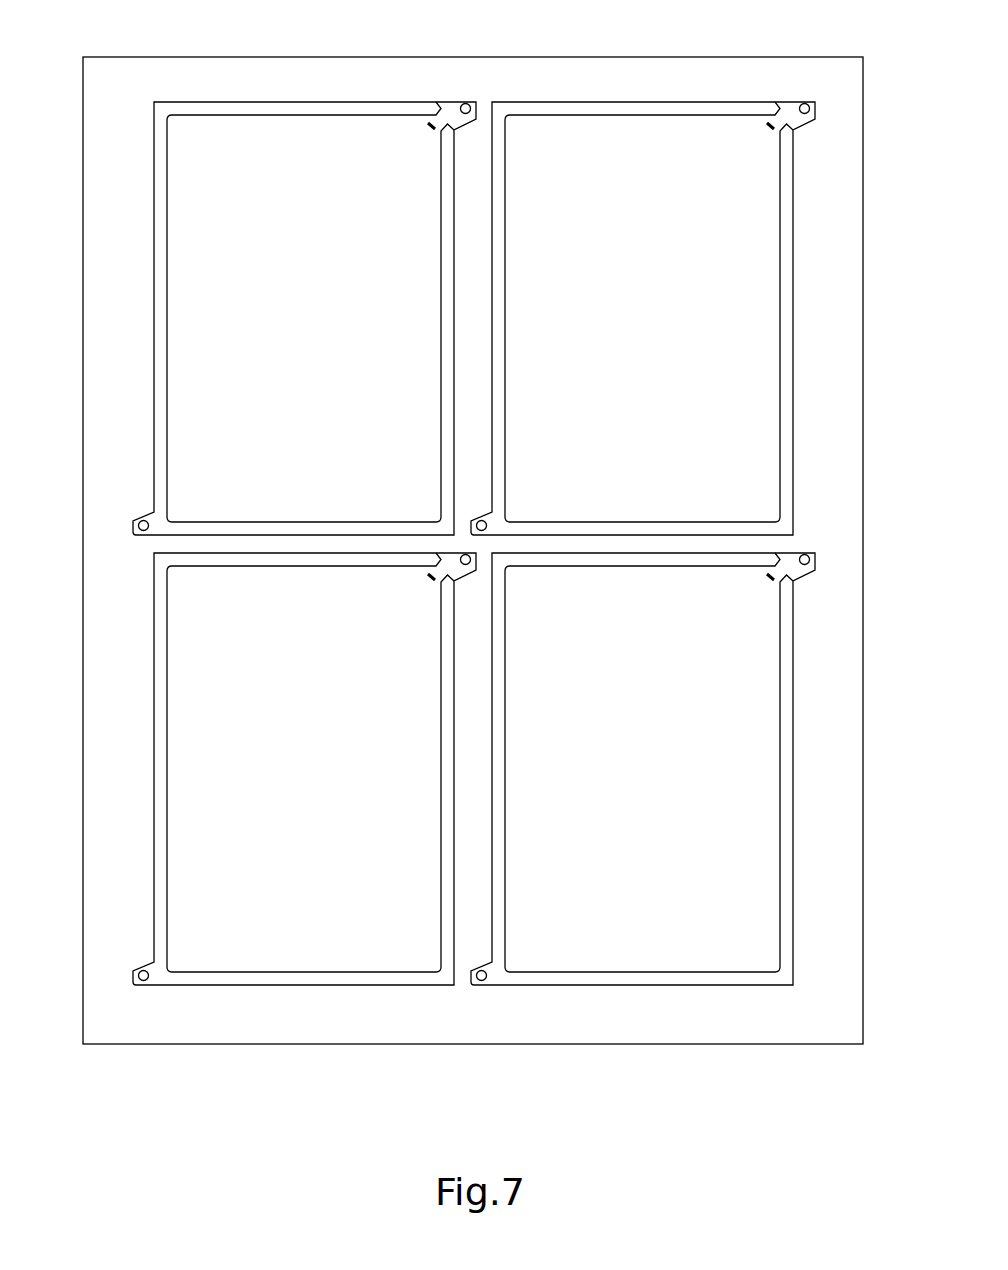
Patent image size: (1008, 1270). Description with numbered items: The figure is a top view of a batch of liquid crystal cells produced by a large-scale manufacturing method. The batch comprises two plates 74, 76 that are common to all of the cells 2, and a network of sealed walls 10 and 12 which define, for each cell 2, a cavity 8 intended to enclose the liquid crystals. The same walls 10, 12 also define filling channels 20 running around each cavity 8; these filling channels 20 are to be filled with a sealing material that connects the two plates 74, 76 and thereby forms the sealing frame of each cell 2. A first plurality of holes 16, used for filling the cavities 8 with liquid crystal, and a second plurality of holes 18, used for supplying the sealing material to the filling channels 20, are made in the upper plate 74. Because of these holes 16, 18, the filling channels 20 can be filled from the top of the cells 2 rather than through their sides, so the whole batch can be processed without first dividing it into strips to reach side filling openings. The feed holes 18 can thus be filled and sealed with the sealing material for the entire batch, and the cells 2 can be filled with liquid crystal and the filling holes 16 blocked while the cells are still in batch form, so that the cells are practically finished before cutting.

The cell 2 is at (473, 552).
The cavity 8 is at (299, 344).
The sealed wall 10 is at (154, 397).
The sealed wall 12 is at (167, 226).
The filling hole 16 is at (465, 104).
The sealing material supply hole 18 is at (138, 976).
The filling channel 20 is at (429, 595).
The upper plate 74 is at (482, 528).
The plate 76 is at (852, 87).